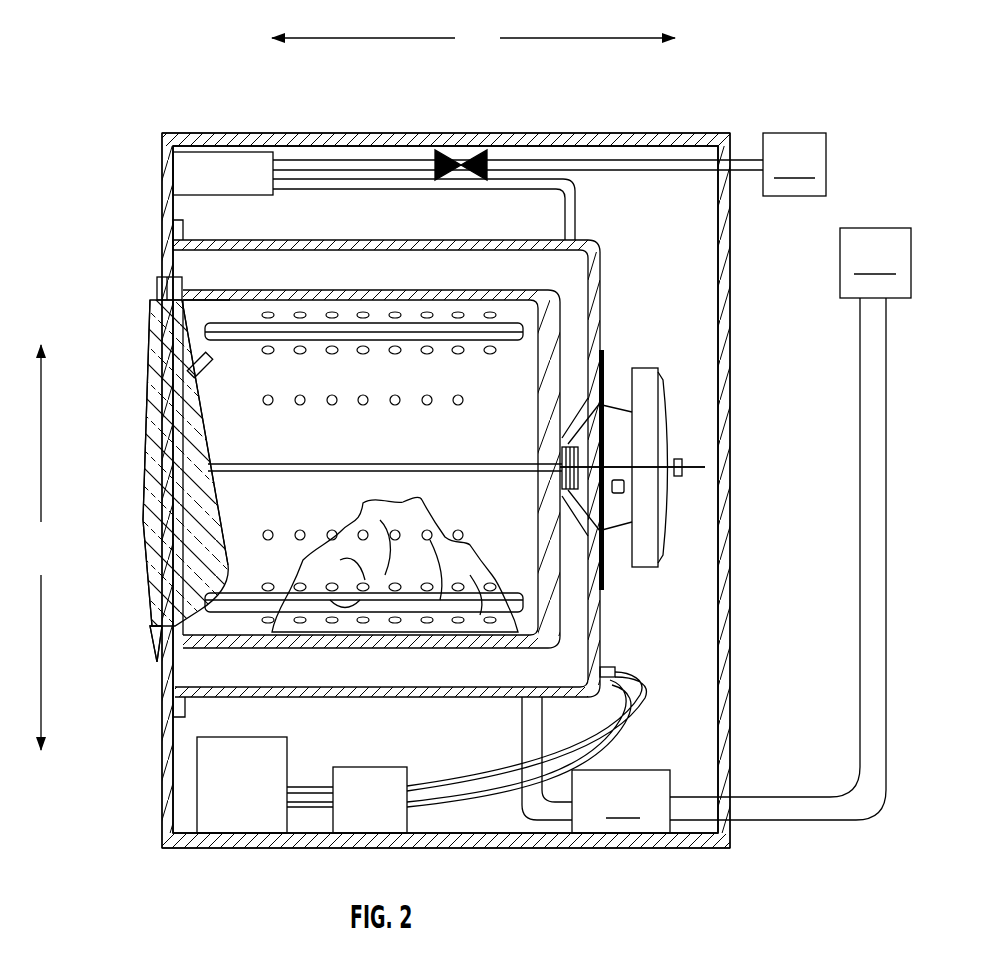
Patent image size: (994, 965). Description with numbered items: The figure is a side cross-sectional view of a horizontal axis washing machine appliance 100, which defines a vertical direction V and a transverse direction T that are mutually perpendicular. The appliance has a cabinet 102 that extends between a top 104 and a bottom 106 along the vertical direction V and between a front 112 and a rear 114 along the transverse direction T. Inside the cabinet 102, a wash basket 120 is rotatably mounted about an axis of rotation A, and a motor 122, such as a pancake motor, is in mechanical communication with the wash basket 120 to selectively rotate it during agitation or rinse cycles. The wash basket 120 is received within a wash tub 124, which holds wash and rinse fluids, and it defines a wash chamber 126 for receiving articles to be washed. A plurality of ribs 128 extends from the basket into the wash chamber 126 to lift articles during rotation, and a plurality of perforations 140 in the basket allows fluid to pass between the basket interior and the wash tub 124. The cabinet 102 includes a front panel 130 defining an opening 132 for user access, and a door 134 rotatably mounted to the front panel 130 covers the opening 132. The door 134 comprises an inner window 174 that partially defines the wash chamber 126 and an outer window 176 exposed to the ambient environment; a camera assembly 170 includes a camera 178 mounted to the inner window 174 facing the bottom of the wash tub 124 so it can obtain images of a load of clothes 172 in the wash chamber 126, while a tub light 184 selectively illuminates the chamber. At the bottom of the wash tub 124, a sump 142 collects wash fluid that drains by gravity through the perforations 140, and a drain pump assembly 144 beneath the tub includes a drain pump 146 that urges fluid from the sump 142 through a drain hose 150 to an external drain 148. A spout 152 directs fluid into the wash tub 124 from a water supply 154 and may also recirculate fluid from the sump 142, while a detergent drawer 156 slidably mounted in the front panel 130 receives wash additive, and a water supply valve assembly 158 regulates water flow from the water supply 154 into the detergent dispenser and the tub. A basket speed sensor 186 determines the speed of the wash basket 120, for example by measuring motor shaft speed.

The washing machine appliance 100 is at (190, 70).
The cabinet 102 is at (730, 475).
The top 104 is at (743, 133).
The bottom 106 is at (755, 840).
The front 112 is at (152, 133).
The rear 114 is at (733, 293).
The wash basket 120 is at (367, 293).
The motor 122 is at (648, 408).
The wash tub 124 is at (600, 302).
The wash chamber 126 is at (232, 424).
The ribs 128 is at (303, 463).
The front panel 130 is at (168, 672).
The opening 132 is at (196, 319).
The door 134 is at (143, 520).
The perforations 140 is at (428, 405).
The sump 142 is at (560, 658).
The drain pump assembly 144 is at (693, 722).
The drain pump 146 is at (433, 752).
The external drain 148 is at (875, 263).
The drain hose 150 is at (860, 600).
The spout 152 is at (575, 212).
The water supply 154 is at (794, 164).
The detergent drawer 156 is at (230, 160).
The water supply valve assembly 158 is at (465, 153).
The camera assembly 170 is at (173, 366).
The load of clothes 172 is at (390, 600).
The inner window 174 is at (222, 520).
The outer window 176 is at (145, 552).
The camera 178 is at (208, 342).
The tub light 184 is at (160, 285).
The basket speed sensor 186 is at (618, 493).
The transverse direction T is at (473, 41).
The vertical direction V is at (42, 547).
The axis of rotation A is at (698, 467).